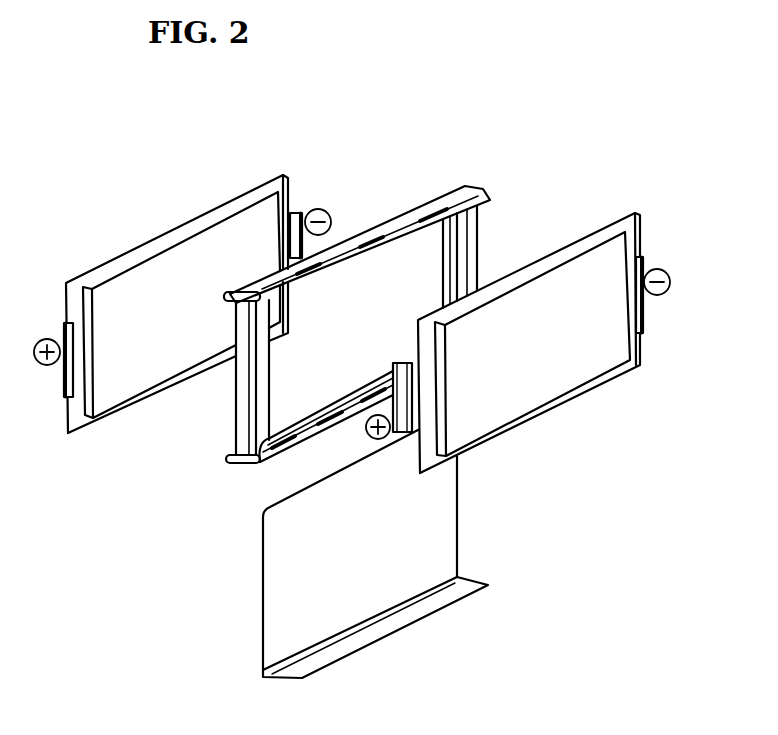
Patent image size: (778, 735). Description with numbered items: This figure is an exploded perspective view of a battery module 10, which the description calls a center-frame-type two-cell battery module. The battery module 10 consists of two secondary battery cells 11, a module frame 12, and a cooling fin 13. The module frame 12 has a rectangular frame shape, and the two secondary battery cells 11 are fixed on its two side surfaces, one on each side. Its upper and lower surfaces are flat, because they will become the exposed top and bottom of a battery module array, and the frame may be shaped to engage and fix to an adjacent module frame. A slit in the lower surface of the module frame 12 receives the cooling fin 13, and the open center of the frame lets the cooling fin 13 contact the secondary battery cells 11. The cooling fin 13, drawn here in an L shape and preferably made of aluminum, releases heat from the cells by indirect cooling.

The battery module 10 is at (175, 131).
The secondary battery cell 11 is at (257, 188).
The module frame 12 is at (344, 332).
The cooling fin 13 is at (450, 515).